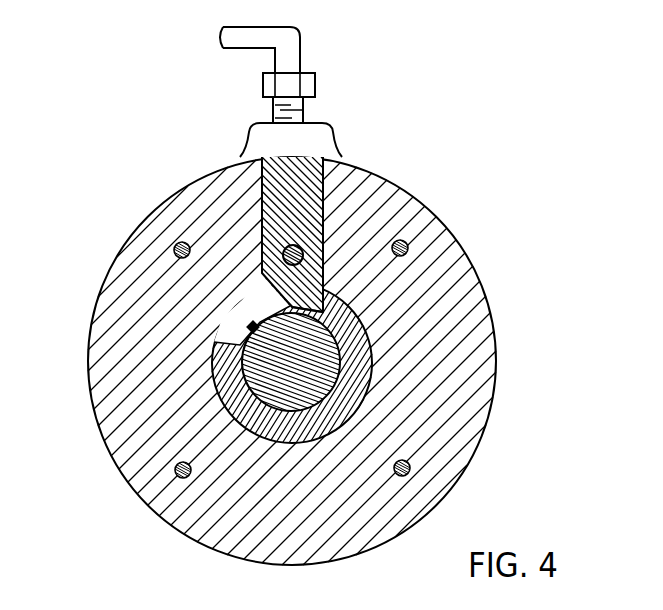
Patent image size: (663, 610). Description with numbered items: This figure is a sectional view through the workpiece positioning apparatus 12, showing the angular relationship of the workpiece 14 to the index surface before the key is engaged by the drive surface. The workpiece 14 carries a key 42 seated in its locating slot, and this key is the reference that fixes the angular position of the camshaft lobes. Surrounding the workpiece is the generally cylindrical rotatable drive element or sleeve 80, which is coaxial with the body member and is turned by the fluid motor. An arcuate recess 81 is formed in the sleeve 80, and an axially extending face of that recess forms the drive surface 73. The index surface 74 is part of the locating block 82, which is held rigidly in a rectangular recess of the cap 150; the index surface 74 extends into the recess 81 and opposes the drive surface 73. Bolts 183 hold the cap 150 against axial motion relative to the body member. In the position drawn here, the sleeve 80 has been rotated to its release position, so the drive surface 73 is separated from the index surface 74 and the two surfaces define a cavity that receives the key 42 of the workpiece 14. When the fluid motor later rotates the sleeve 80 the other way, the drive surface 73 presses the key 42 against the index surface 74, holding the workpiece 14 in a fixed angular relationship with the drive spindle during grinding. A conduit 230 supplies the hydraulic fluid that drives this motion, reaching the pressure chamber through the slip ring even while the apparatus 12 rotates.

The workpiece positioning apparatus 12 is at (147, 203).
The workpiece 14 is at (322, 368).
The key 42 is at (250, 326).
The drive surface 73 is at (240, 343).
The index surface 74 is at (305, 344).
The drive element or sleeve 80 is at (235, 398).
The arcuate recess 81 is at (258, 303).
The locating block 82 is at (323, 207).
The cap 150 is at (480, 410).
The bolts 183 is at (172, 254).
The conduit 230 is at (302, 34).